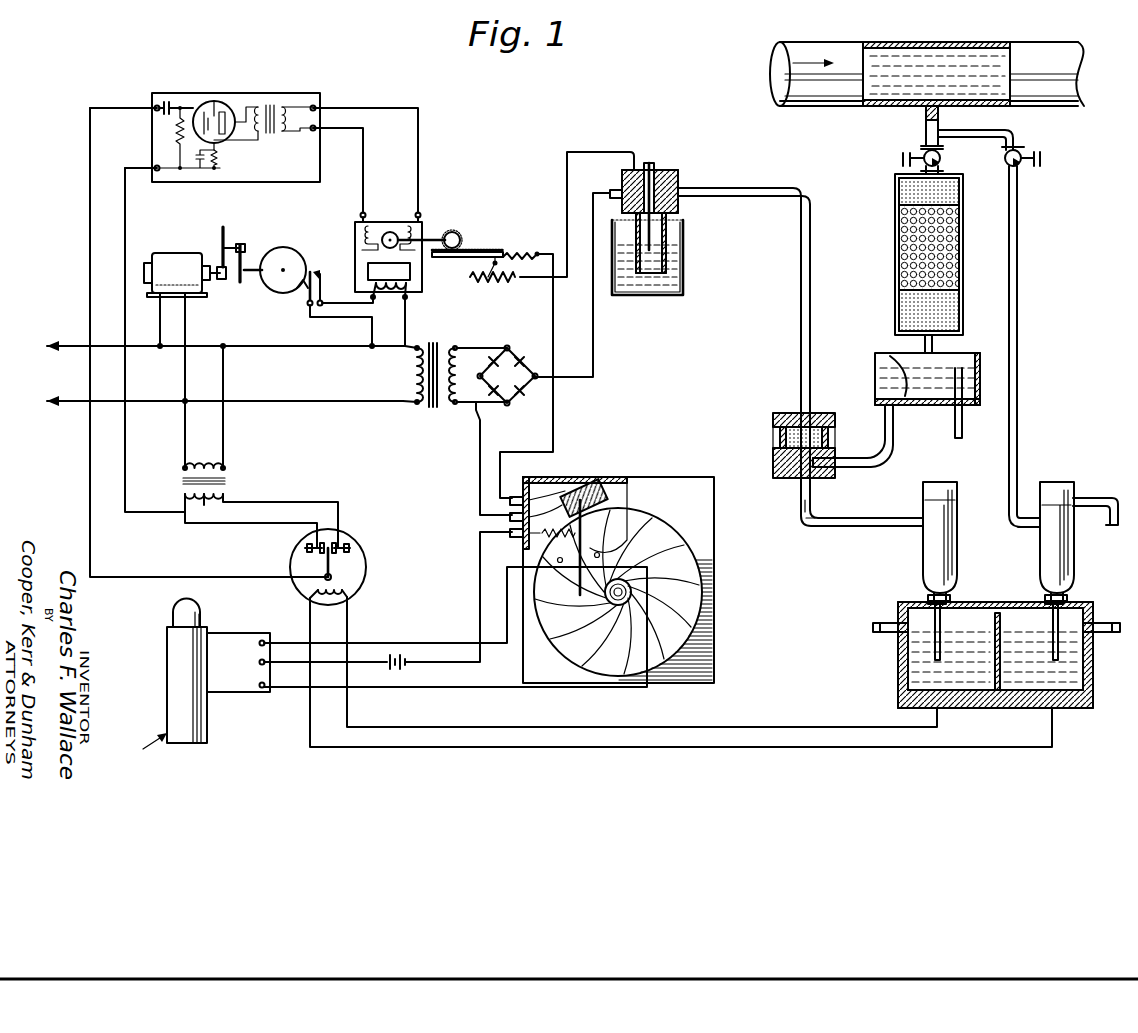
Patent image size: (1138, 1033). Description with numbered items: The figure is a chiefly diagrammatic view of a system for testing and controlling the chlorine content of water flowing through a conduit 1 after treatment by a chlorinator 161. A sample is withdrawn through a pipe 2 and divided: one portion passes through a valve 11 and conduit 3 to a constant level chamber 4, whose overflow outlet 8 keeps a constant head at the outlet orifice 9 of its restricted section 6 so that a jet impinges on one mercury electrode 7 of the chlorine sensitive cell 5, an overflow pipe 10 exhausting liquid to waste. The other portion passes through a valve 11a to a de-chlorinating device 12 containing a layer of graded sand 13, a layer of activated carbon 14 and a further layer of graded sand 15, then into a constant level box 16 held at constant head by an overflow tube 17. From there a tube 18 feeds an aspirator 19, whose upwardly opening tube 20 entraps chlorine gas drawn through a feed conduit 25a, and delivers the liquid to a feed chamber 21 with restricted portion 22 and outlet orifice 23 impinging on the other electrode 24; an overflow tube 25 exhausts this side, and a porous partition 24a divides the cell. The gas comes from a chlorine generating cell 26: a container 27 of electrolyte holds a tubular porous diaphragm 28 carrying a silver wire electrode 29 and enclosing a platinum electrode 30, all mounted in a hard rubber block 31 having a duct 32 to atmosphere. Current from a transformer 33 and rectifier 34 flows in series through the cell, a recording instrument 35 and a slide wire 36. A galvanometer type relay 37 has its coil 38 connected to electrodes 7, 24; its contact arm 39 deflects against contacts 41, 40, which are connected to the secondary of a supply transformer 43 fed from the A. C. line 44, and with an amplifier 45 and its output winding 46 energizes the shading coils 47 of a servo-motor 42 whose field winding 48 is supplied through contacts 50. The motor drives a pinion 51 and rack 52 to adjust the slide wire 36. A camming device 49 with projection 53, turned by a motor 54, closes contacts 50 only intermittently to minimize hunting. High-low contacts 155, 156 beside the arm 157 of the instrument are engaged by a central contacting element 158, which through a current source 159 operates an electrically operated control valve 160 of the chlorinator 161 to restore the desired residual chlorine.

The conduit 1 is at (1060, 48).
The pipe 2 is at (942, 131).
The conduit 3 is at (1018, 258).
The constant level chamber 4 is at (1073, 545).
The chlorine sensitive cell 5 is at (1093, 695).
The restricted section 6 is at (1058, 620).
The electrode 7 is at (1055, 712).
The overflow outlet 8 is at (1112, 497).
The outlet orifice 9 is at (1083, 660).
The overflow pipe 10 is at (1116, 618).
The valve 11 is at (1022, 153).
The valve 11a is at (942, 160).
The de-chlorinating device 12 is at (895, 213).
The layer of graded sand 13 is at (895, 184).
The layer of activated carbon 14 is at (895, 240).
The layer of graded sand 15 is at (895, 314).
The constant level box 16 is at (976, 353).
The overflow tube 17 is at (962, 419).
The tube 18 is at (893, 448).
The aspirator 19 is at (810, 413).
The tube 20 is at (812, 504).
The feed chamber 21 is at (957, 500).
The restricted portion 22 is at (935, 618).
The outlet orifice 23 is at (898, 660).
The electrode 24 is at (898, 700).
The permeable partition 24a is at (994, 705).
The overflow tube 25 is at (876, 625).
The feed conduit 25a is at (801, 330).
The chlorine generating cell 26 is at (660, 292).
The container 27 is at (683, 288).
The tubular porous diaphragm 28 is at (683, 238).
The electrode 29 is at (683, 265).
The electrode 30 is at (675, 228).
The hard rubber block 31 is at (666, 170).
The duct 32 is at (630, 165).
The transformer 33 is at (436, 345).
The rectifier 34 is at (520, 355).
The recording instrument 35 is at (667, 478).
The slide wire 36 is at (504, 283).
The galvanometer type relay 37 is at (366, 562).
The movable coil 38 is at (346, 588).
The contact arm 39 is at (326, 568).
The contact 40 is at (339, 548).
The contact 41 is at (340, 545).
The servo-motor 42 is at (392, 231).
The supply transformer 43 is at (206, 468).
The A. C. line 44 is at (75, 345).
The amplifier 45 is at (242, 93).
The output winding 46 is at (292, 110).
The shading coils 47 is at (368, 221).
The field winding 48 is at (410, 290).
The camming device 49 is at (285, 247).
The contacts 50 is at (321, 270).
The pinion 51 is at (460, 233).
The rack 52 is at (482, 251).
The cam projection 53 is at (292, 289).
The motor 54 is at (180, 253).
The high-low contact 155 is at (575, 592).
The high-low contact 156 is at (626, 556).
The arm 157 is at (640, 511).
The central contacting element 158 is at (576, 602).
The current source 159 is at (405, 663).
The electrically operated control valve 160 is at (237, 632).
The chlorinator 161 is at (166, 638).